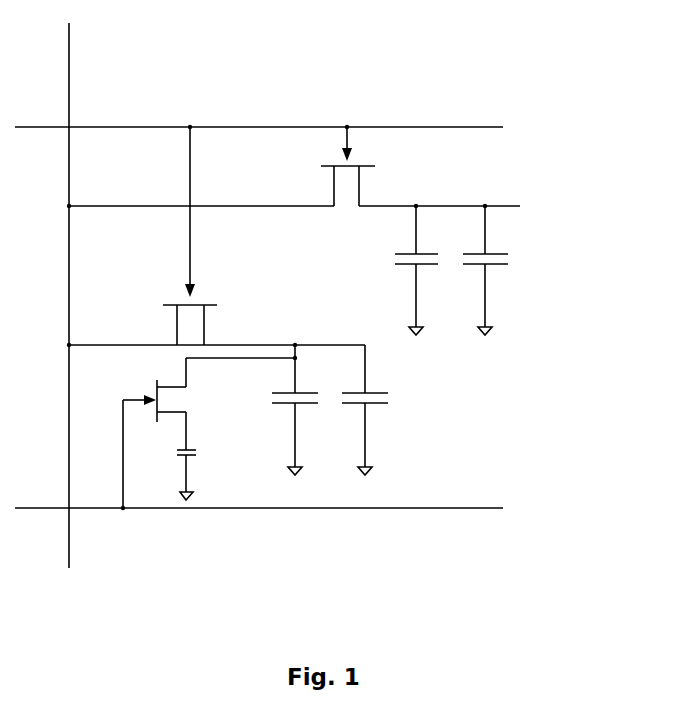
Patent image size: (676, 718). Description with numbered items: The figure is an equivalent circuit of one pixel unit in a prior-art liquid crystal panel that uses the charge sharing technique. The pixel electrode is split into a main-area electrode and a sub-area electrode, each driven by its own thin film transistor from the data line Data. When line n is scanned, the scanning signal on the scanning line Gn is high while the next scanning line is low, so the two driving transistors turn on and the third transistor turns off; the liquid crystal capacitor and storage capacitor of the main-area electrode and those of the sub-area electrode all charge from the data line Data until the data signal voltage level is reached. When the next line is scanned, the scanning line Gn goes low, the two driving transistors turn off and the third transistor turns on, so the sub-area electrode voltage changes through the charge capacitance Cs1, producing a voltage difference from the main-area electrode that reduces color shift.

The data line Data is at (100, 295).
The scanning line Gn is at (281, 131).
The charge capacitance Cs1 is at (202, 456).